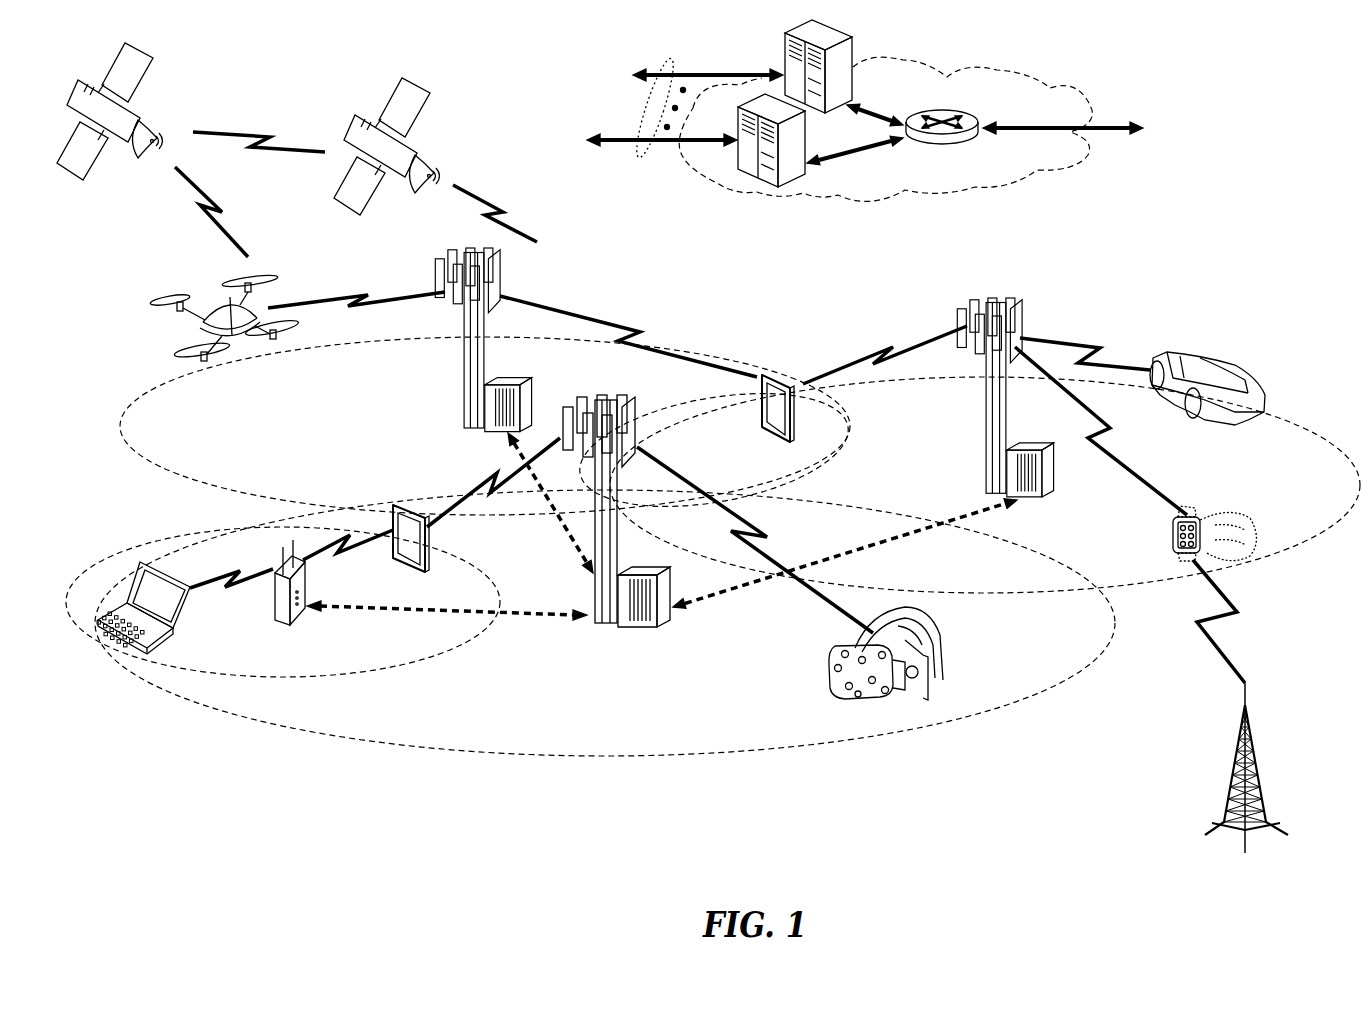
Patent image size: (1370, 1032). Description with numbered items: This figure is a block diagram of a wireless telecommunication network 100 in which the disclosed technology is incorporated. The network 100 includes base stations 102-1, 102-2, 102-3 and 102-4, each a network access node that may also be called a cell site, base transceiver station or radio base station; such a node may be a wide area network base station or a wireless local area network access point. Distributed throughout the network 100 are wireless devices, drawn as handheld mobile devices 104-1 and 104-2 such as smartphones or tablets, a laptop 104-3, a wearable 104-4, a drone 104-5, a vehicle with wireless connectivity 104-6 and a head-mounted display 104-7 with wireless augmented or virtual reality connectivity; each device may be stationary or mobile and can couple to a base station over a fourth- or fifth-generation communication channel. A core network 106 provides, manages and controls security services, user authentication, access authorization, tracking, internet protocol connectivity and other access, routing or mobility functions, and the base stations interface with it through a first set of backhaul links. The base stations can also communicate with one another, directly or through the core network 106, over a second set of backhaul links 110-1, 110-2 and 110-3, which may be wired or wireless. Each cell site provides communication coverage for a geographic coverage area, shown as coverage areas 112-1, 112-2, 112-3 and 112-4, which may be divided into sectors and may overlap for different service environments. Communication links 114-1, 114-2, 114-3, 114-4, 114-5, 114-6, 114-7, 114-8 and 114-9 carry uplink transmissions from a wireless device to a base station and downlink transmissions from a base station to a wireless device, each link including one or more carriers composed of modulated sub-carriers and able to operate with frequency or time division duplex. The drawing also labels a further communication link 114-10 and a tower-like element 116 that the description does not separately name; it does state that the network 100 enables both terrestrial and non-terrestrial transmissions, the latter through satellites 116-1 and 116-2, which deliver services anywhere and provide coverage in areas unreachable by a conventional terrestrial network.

The wireless telecommunication network 100 is at (1284, 114).
The base station 102-1 is at (600, 627).
The base station 102-2 is at (467, 377).
The base station 102-3 is at (988, 413).
The base station 102-4 is at (273, 612).
The handheld mobile device 104-1 is at (427, 555).
The handheld mobile device 104-2 is at (757, 407).
The laptop 104-3 is at (123, 647).
The wearable 104-4 is at (1187, 513).
The drone 104-5 is at (233, 345).
The vehicle with wireless connectivity 104-6 is at (1225, 362).
The head-mounted display 104-7 is at (937, 640).
The core network 106 is at (975, 193).
The backhaul link 110-1 is at (343, 608).
The backhaul link 110-2 is at (908, 533).
The backhaul link 110-3 is at (563, 533).
The coverage area 112-1 is at (530, 757).
The coverage area 112-2 is at (410, 665).
The coverage area 112-3 is at (187, 485).
The coverage area 112-4 is at (1270, 415).
The communication link 114-1 is at (770, 534).
The communication link 114-2 is at (490, 477).
The communication link 114-3 is at (202, 582).
The communication link 114-4 is at (347, 560).
The communication link 114-5 is at (353, 293).
The communication link 114-6 is at (880, 353).
The communication link 114-7 is at (640, 330).
The communication link 114-8 is at (1113, 452).
The communication link 114-9 is at (1082, 345).
The wireless communication link 114-10 is at (1223, 620).
The radio tower 116 is at (1260, 745).
The satellite 116-1 is at (158, 122).
The satellite 116-2 is at (430, 160).